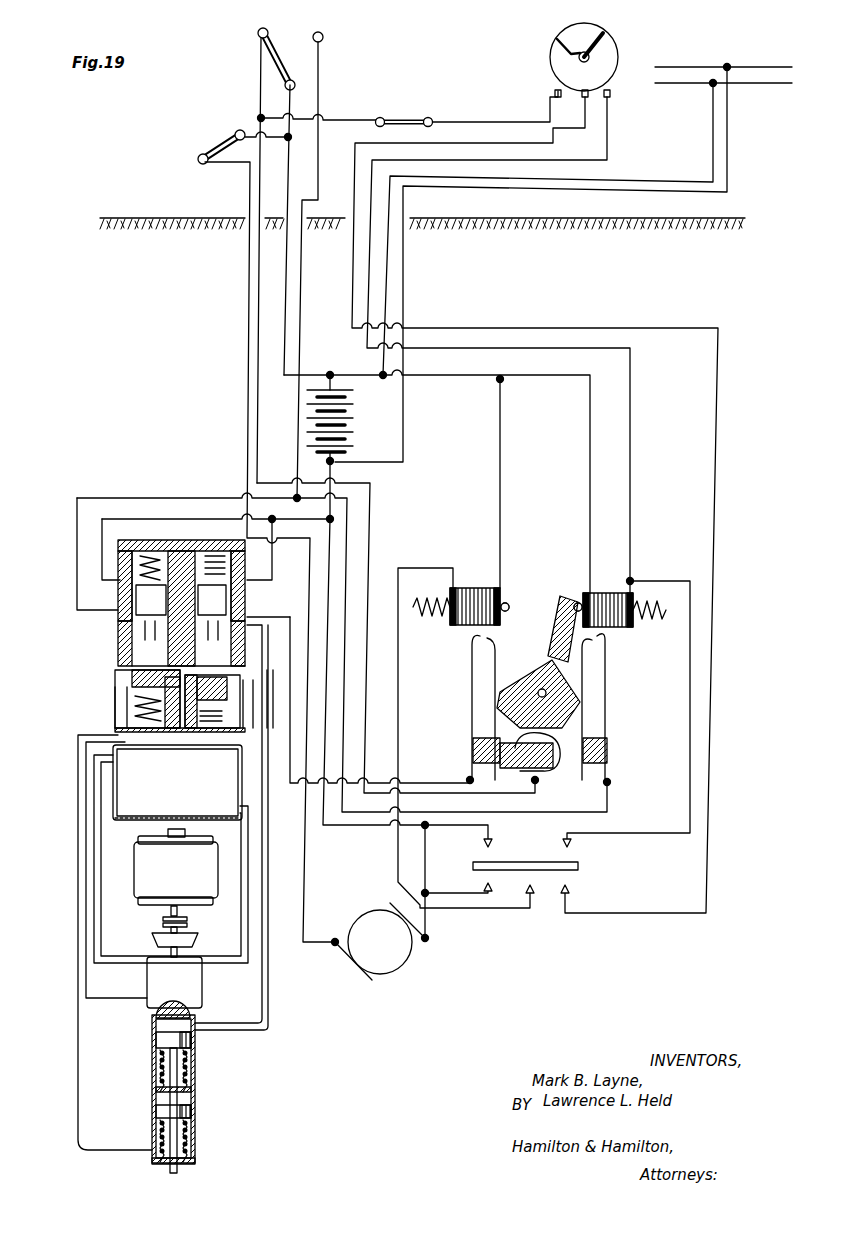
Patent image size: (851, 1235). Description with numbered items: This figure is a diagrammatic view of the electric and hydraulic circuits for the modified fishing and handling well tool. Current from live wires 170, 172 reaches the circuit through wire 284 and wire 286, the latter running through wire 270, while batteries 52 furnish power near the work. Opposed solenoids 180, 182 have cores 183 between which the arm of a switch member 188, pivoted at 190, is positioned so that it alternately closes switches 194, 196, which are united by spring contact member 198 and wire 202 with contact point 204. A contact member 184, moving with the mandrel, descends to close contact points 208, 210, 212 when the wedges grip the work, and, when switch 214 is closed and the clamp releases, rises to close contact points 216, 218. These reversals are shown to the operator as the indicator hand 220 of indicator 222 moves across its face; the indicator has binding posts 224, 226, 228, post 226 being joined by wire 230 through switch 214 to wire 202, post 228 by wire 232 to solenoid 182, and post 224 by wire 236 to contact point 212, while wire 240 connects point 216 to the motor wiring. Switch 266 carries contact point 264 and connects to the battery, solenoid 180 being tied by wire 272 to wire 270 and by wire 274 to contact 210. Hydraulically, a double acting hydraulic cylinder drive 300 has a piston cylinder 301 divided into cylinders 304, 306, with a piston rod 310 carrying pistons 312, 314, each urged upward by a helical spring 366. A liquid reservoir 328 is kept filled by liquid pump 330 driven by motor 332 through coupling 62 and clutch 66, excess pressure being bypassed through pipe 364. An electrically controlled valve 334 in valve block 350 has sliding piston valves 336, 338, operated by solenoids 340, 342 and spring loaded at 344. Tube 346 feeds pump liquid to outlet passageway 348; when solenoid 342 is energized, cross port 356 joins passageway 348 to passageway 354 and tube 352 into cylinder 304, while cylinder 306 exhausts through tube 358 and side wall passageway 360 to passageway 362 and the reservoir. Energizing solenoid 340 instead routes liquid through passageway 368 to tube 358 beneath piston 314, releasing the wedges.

The batteries 52 is at (350, 422).
The coupling 62 is at (163, 922).
The clutch 66 is at (152, 942).
The live wire 170 is at (747, 67).
The live wire 172 is at (745, 84).
The solenoid 180 is at (458, 628).
The solenoid 182 is at (620, 630).
The cores 183 is at (510, 602).
The contact member 184 is at (522, 860).
The switch member 188 is at (566, 676).
The pivot 190 is at (547, 693).
The switch 194 is at (470, 722).
The switch 196 is at (610, 713).
The spring contact member 198 is at (555, 770).
The wire 202 is at (248, 408).
The contact point 204 is at (266, 490).
The contact point 208 is at (483, 887).
The contact point 210 is at (520, 890).
The contact point 212 is at (570, 890).
The switch 214 is at (394, 120).
The contact point 216 is at (483, 846).
The contact point 218 is at (572, 850).
The indicator hand 220 is at (557, 48).
The indicator 222 is at (550, 62).
The binding post 224 is at (553, 98).
The binding post 226 is at (585, 104).
The binding post 228 is at (610, 97).
The wire 230 is at (472, 121).
The wire 232 is at (607, 163).
The wire 236 is at (355, 189).
The wire 240 is at (328, 828).
The contact point 264 is at (326, 40).
The switch 266 is at (278, 50).
The wire 270 is at (368, 378).
The wire 272 is at (497, 533).
The wire 274 is at (437, 568).
The wire 284 is at (728, 172).
The wire 286 is at (712, 153).
The double acting hydraulic cylinder drive 300 is at (167, 1087).
The piston cylinder 301 is at (196, 1152).
The cylinder 304 is at (152, 1026).
The cylinder 306 is at (156, 1098).
The piston rod 310 is at (166, 1073).
The piston 312 is at (156, 1042).
The piston 314 is at (156, 1115).
The liquid reservoir 328 is at (160, 808).
The liquid pump 330 is at (202, 993).
The motor 332 is at (390, 968).
The electrically controlled valve 334 is at (118, 654).
The sliding piston valve 336 is at (140, 634).
The sliding piston valve 338 is at (228, 635).
The solenoid 340 is at (132, 595).
The solenoid 342 is at (247, 602).
The spring 344 is at (135, 706).
The tube 346 is at (86, 729).
The outlet passageway 348 is at (151, 600).
The valve block 350 is at (149, 652).
The tube 352 is at (255, 1033).
The passageway 354 is at (247, 665).
The cross port 356 is at (213, 599).
The tube 358 is at (78, 1119).
The side wall passageway 360 is at (115, 689).
The passageway 362 is at (115, 714).
The pipe 364 is at (125, 964).
The helical spring 366 is at (196, 1075).
The passageway 368 is at (118, 668).